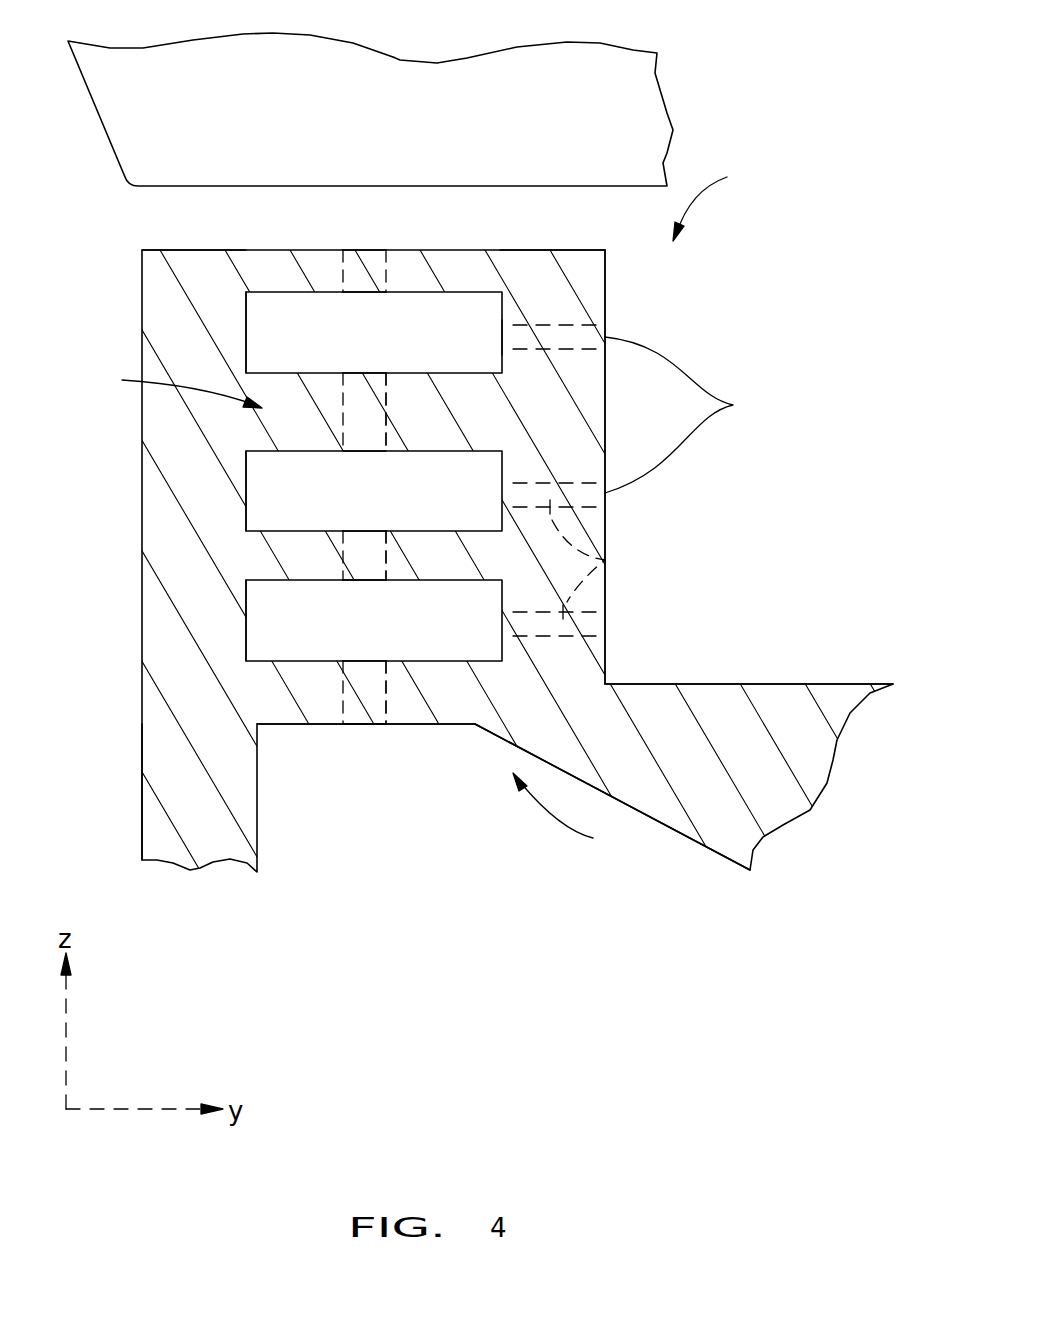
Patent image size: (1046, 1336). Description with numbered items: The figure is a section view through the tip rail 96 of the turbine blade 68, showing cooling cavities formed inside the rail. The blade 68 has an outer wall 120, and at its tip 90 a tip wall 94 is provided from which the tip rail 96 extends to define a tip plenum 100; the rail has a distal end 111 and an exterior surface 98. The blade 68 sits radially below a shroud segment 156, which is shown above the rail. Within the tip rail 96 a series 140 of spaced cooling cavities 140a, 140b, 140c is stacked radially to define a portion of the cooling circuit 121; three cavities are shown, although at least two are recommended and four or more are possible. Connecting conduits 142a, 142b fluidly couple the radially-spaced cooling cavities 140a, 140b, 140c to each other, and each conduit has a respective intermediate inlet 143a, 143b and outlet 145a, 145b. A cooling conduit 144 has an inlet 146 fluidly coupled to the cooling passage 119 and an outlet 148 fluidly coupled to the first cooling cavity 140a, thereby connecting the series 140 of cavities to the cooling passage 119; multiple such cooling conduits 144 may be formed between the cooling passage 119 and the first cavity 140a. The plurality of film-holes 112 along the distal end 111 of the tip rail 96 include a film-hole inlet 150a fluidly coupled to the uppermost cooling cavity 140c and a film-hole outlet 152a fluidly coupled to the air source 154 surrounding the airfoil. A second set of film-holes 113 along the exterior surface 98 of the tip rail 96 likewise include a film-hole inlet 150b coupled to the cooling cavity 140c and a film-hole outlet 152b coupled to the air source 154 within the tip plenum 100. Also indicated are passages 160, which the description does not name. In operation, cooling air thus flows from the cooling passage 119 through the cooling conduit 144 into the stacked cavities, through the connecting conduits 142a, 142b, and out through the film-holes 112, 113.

The shroud segment 156 is at (422, 145).
The distal end 111 is at (232, 250).
The film-holes 112 is at (353, 280).
The film-hole outlet 152a is at (357, 250).
The tip rail 96 is at (565, 250).
The tip 90 is at (718, 201).
The air source 154 is at (760, 225).
The bleed passage 160 is at (267, 293).
The radially-spaced cooling cavity 140c is at (393, 342).
The film-hole inlet 150a is at (370, 293).
The film-hole inlet 150b is at (513, 325).
The outlet 145b is at (350, 372).
The series of spaced cooling cavities 140 is at (167, 388).
The connecting conduit 142b is at (386, 412).
The intermediate inlet 143b is at (375, 453).
The radially-spaced cooling cavity 140b is at (420, 503).
The outlet 145a is at (360, 531).
The outer wall 120 is at (135, 521).
The connecting conduit 142a is at (386, 560).
The second set of film-holes 113 is at (558, 337).
The exterior surface 98 is at (605, 390).
The film-hole outlet 152b is at (605, 625).
The tip plenum 100 is at (795, 512).
The intermediate inlet 143a is at (360, 582).
The first cooling cavity 140a is at (418, 631).
The outlet 148 is at (368, 658).
The cooling conduit 144 is at (388, 692).
The inlet 146 is at (360, 725).
The cooling passage 119 is at (418, 817).
The cooling circuit 121 is at (612, 797).
The tip wall 94 is at (753, 684).
The turbine blade 68 is at (170, 762).